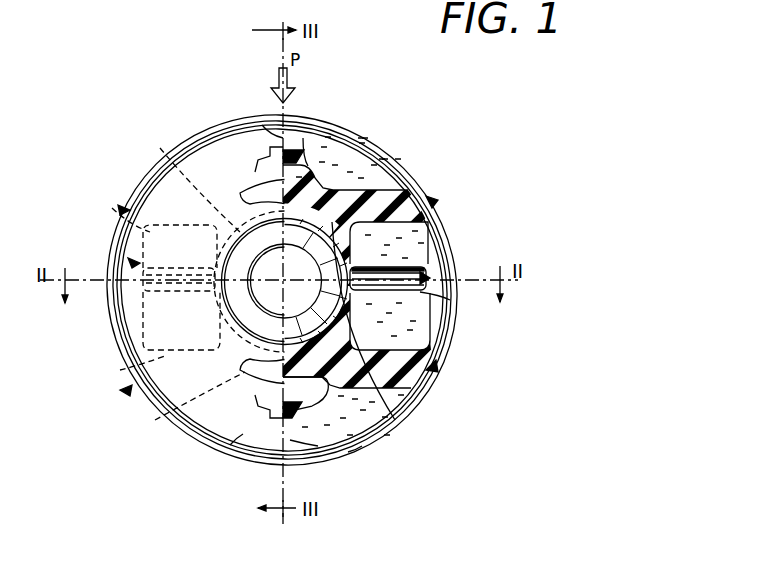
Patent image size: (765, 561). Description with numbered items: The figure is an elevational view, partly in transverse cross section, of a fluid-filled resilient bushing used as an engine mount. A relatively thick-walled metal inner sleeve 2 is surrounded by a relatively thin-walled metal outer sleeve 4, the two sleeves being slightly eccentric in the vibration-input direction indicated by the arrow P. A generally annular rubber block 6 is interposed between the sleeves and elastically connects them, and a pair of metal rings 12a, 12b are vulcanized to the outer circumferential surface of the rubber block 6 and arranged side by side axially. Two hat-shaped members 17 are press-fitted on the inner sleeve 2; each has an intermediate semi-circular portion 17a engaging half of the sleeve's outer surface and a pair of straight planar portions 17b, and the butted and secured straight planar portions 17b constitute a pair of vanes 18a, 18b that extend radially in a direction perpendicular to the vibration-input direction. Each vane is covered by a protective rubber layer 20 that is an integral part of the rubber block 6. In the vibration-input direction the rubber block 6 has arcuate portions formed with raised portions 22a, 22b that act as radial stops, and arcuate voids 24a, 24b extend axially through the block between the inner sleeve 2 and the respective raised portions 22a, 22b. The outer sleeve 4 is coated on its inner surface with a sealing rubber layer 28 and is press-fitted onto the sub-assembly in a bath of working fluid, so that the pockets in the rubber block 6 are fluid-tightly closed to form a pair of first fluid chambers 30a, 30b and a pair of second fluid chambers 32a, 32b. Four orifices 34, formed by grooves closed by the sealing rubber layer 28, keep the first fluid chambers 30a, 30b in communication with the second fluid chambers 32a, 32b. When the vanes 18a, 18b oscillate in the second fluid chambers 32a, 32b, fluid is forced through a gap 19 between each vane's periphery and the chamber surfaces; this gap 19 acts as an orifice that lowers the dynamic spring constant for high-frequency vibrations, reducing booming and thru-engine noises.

The inner sleeve 2 is at (318, 268).
The outer sleeve 4 is at (393, 150).
The rubber block 6 is at (392, 205).
The metal ring 12a is at (238, 440).
The metal ring 12b is at (354, 456).
The hat-shaped member 17 is at (334, 214).
The intermediate semi-circular portion 17a is at (175, 162).
The straight planar portion 17b is at (112, 208).
The vane 18a is at (148, 264).
The vane 18b is at (422, 266).
The gap 19 is at (130, 262).
The protective rubber layer 20 is at (450, 300).
The raised portion 22a is at (275, 140).
The raised portion 22b is at (318, 446).
The arcuate void 24a is at (252, 194).
The arcuate void 24b is at (248, 388).
The sealing rubber layer 28 is at (400, 412).
The first fluid chamber 30a is at (350, 156).
The first fluid chamber 30b is at (362, 437).
The second fluid chamber 32a is at (150, 320).
The second fluid chamber 32b is at (424, 323).
The orifice 34 is at (124, 206).